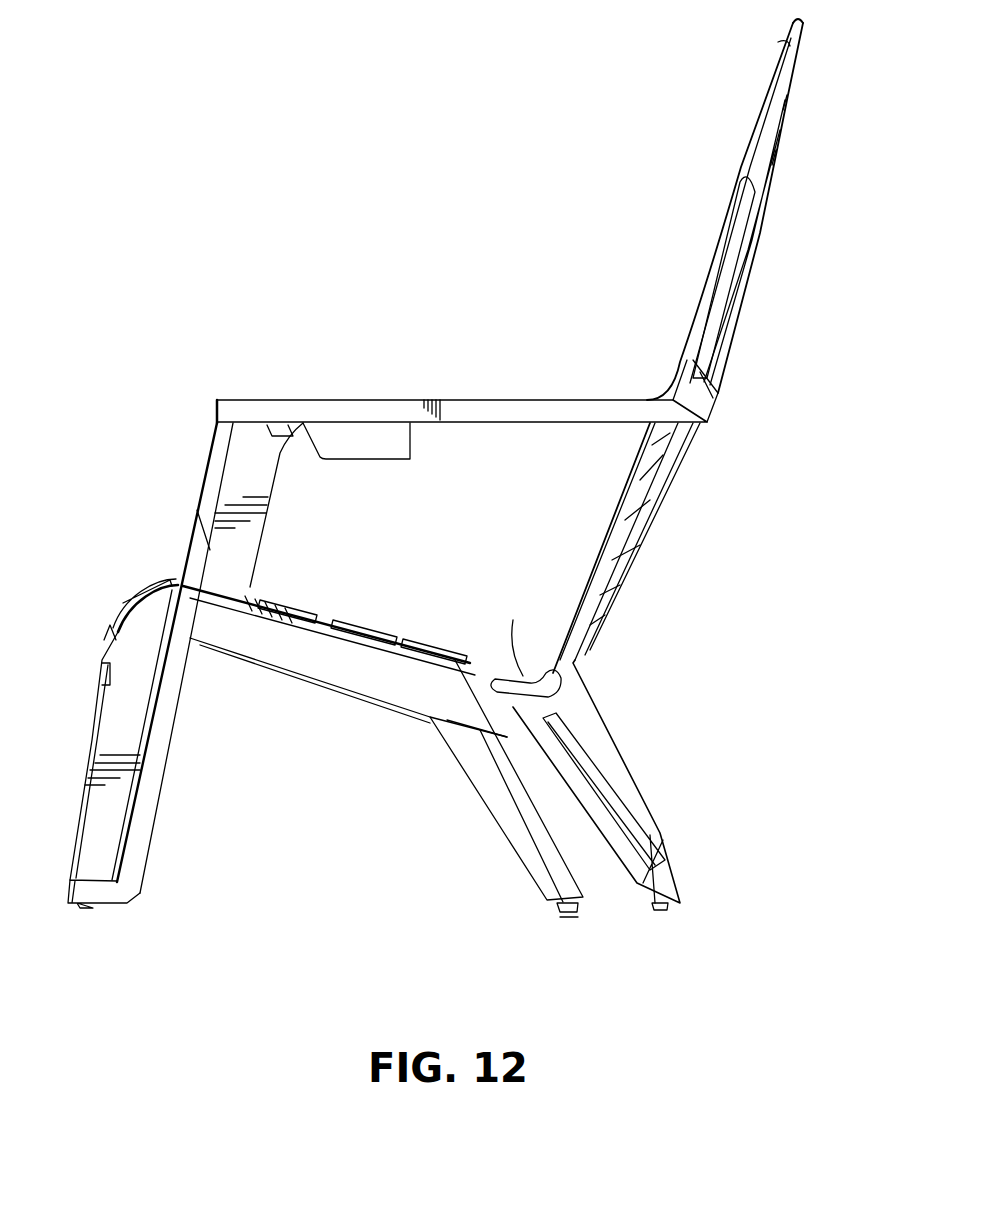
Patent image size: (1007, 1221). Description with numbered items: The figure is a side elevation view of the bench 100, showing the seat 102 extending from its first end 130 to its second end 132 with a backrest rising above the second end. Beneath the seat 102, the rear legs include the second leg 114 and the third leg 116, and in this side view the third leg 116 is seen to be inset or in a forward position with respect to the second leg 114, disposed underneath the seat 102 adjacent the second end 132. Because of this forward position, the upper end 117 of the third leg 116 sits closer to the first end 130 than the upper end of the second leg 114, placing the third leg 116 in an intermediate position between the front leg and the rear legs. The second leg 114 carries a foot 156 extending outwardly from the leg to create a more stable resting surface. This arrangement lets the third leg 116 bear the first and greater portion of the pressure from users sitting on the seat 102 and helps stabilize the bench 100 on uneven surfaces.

The bench 100 is at (435, 463).
The seat 102 is at (352, 630).
The second leg 114 is at (632, 773).
The third leg 116 is at (500, 825).
The upper end 117 is at (432, 718).
The first end 130 is at (178, 585).
The second end 132 is at (525, 675).
The foot 156 is at (562, 918).